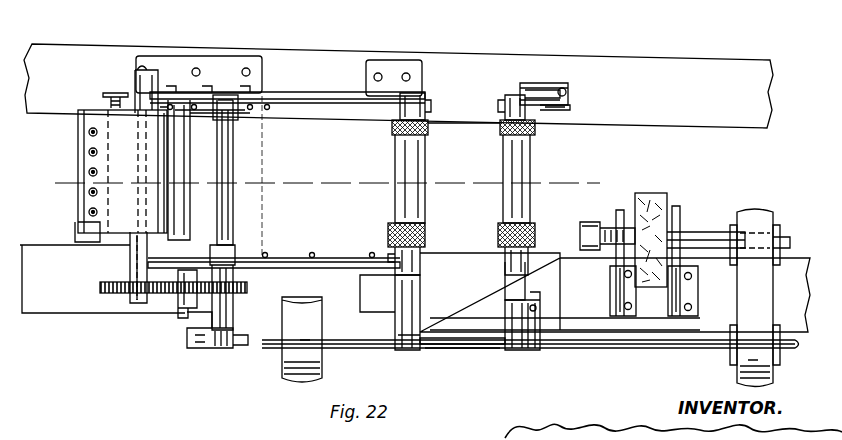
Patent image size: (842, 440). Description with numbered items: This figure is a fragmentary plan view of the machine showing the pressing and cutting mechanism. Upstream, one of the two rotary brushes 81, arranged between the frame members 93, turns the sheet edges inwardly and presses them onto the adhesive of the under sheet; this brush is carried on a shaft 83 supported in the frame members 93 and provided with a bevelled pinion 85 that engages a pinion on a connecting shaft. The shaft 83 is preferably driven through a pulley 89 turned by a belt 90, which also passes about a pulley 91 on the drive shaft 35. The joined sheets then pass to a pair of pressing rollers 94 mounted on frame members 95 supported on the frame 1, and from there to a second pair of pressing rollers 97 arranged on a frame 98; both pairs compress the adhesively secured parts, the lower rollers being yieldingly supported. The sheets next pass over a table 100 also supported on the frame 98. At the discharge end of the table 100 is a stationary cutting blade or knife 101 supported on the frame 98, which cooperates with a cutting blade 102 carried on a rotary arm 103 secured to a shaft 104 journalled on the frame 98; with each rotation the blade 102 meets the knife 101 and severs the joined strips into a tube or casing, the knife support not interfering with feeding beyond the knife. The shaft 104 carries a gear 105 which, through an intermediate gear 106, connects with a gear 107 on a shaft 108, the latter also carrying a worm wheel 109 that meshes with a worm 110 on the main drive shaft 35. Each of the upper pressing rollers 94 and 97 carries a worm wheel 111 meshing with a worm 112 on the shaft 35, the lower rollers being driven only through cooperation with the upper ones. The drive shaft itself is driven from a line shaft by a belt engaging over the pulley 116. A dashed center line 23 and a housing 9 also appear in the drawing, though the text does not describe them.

The frame 1 is at (712, 76).
The housing 9 is at (615, 292).
The center line 23 is at (322, 188).
The drive shaft 35 is at (666, 352).
The rotary brush 81 is at (655, 196).
The shaft 83 is at (700, 244).
The bevelled pinion 85 is at (583, 222).
The pulley 89 is at (782, 228).
The belt 90 is at (752, 212).
The pulley 91 is at (728, 364).
The frame member 93 is at (616, 296).
The pressing rollers 94 is at (530, 182).
The frame members 95 is at (510, 100).
The pressing rollers 97 is at (425, 214).
The frame 98 is at (345, 80).
The table 100 is at (282, 128).
The cutting blade or knife 101 is at (190, 160).
The cutting blade 102 is at (78, 154).
The rotary arm 103 is at (96, 212).
The shaft 104 is at (130, 262).
The gear 105 is at (107, 292).
The intermediate gear 106 is at (180, 300).
The gear 107 is at (252, 268).
The shaft 108 is at (233, 208).
The worm wheel 109 is at (188, 345).
The worm 110 is at (236, 348).
The worm wheel 111 is at (462, 350).
The worm 112 is at (400, 350).
The pulley 116 is at (297, 382).